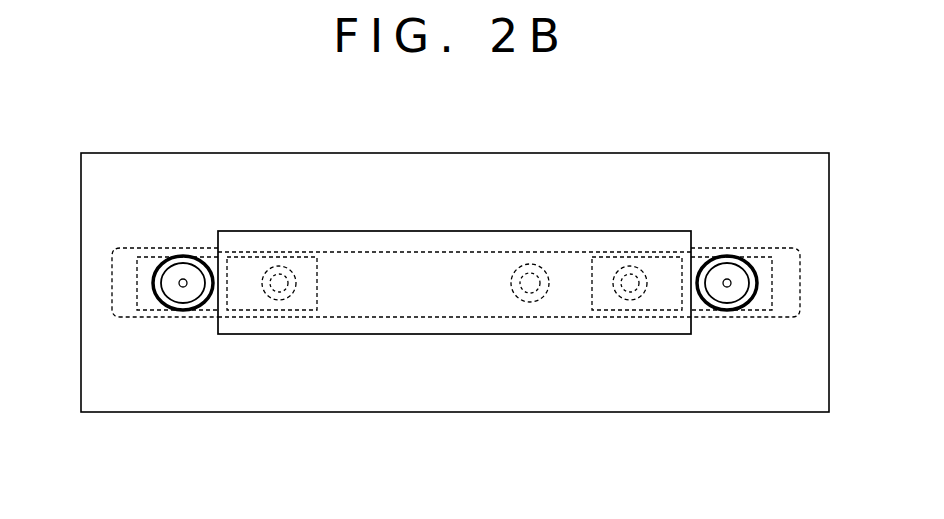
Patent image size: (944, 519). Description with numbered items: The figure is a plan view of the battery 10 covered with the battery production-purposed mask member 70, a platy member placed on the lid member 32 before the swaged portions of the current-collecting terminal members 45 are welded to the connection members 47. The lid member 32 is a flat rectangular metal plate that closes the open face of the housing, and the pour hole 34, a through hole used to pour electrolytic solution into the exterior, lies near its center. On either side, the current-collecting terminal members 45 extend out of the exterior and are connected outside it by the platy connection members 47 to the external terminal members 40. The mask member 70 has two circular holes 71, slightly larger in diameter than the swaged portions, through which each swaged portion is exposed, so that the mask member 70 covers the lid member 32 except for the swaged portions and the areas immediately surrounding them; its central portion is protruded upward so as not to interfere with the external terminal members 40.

The battery 10 is at (455, 290).
The lid member 32 is at (414, 273).
The pour hole 34 is at (528, 302).
The external terminal members 40 is at (293, 264).
The current-collecting terminal members 45 is at (183, 258).
The connection members 47 is at (245, 257).
The battery production-purposed mask member 70 is at (402, 377).
The circular holes 71 is at (168, 310).